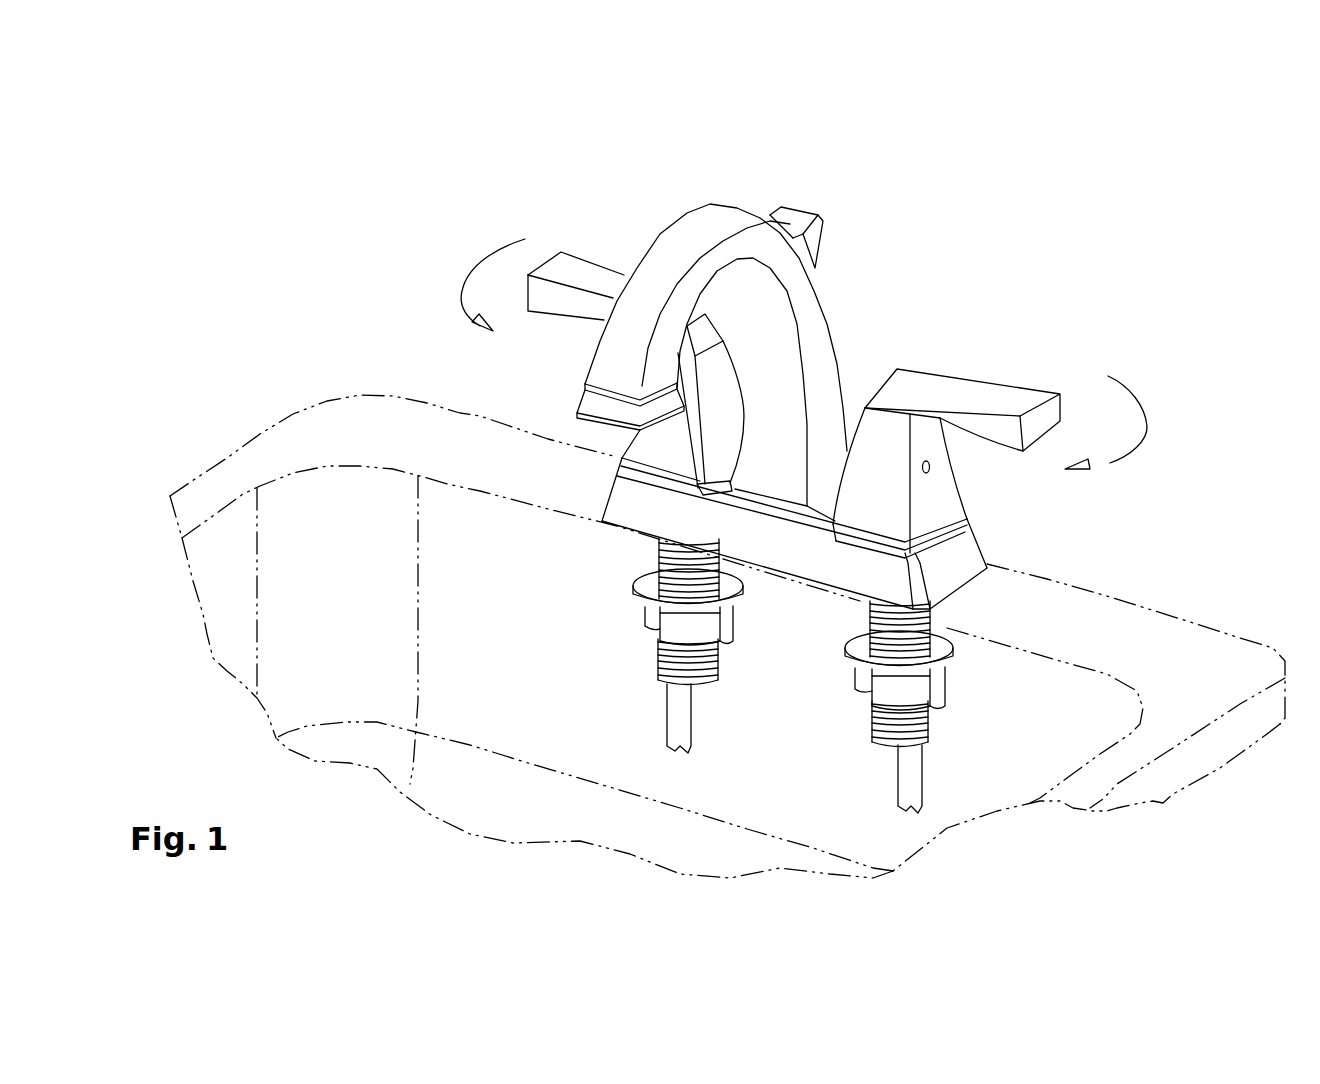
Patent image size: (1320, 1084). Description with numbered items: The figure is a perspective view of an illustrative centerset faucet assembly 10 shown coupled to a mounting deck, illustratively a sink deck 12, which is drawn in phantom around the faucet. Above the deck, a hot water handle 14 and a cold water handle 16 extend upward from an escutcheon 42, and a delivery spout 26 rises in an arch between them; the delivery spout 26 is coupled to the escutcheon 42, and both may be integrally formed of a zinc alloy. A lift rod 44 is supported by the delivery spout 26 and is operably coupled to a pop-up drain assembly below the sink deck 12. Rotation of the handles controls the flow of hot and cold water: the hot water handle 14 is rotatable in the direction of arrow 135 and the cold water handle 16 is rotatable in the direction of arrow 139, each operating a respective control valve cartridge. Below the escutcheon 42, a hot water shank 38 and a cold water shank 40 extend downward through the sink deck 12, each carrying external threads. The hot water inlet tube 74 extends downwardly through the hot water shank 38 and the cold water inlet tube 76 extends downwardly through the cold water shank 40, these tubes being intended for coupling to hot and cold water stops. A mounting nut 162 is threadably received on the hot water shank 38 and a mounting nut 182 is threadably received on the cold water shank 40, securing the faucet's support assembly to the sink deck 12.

The faucet assembly 10 is at (811, 344).
The sink deck 12 is at (1193, 646).
The hot water handle 14 is at (579, 270).
The cold water handle 16 is at (1000, 392).
The delivery spout 26 is at (710, 208).
The hot water shank 38 is at (655, 562).
The cold water shank 40 is at (870, 618).
The escutcheon 42 is at (969, 553).
The lift rod 44 is at (793, 213).
The hot water inlet tube 74 is at (673, 706).
The cold water inlet tube 76 is at (903, 767).
The arrow 135 is at (457, 296).
The arrow 139 is at (1147, 414).
The mounting nut 162 is at (637, 583).
The mounting nut 182 is at (870, 657).